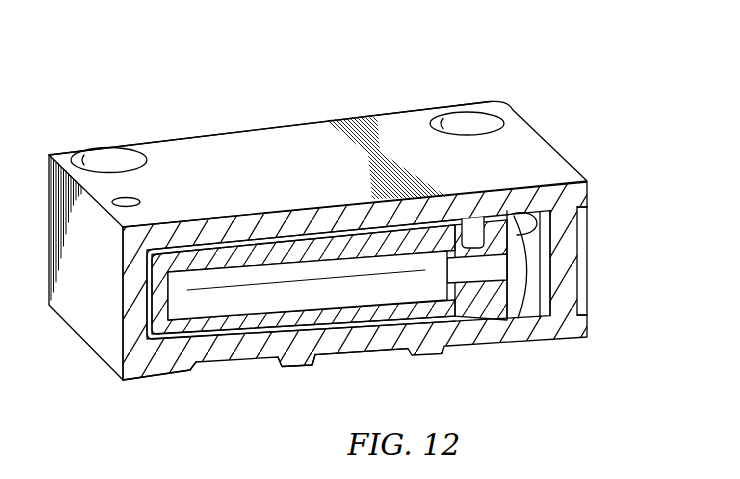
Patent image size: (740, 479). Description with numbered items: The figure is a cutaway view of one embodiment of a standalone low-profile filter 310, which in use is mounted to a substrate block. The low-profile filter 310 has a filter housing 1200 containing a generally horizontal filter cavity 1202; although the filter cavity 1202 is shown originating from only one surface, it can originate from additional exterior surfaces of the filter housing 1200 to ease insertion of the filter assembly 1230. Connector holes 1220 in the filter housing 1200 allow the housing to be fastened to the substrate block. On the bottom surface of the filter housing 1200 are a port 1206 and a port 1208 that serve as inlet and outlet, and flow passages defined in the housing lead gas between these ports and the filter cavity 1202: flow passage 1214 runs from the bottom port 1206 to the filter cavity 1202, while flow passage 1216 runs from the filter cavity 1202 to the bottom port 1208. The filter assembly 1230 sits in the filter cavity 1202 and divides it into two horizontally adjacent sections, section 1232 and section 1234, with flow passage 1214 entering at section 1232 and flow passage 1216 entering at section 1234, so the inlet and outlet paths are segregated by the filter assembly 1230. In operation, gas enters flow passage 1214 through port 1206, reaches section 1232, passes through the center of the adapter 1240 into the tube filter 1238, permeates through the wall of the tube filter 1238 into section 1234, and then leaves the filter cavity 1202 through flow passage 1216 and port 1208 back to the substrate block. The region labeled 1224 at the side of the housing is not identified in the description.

The low-profile filter 310 is at (291, 94).
The filter housing 1200 is at (203, 140).
The connector holes 1220 is at (103, 160).
The filter assembly 1230 is at (296, 230).
The adapter 1240 is at (492, 228).
The flow passage 1214 is at (522, 230).
The port 1224 is at (586, 270).
The section of filter cavity 1232 is at (522, 313).
The tube filter 1238 is at (430, 340).
The port 1206 is at (383, 350).
The section of filter cavity 1234 is at (339, 350).
The filter cavity 1202 is at (305, 364).
The flow passage 1216 is at (252, 354).
The port 1208 is at (204, 367).